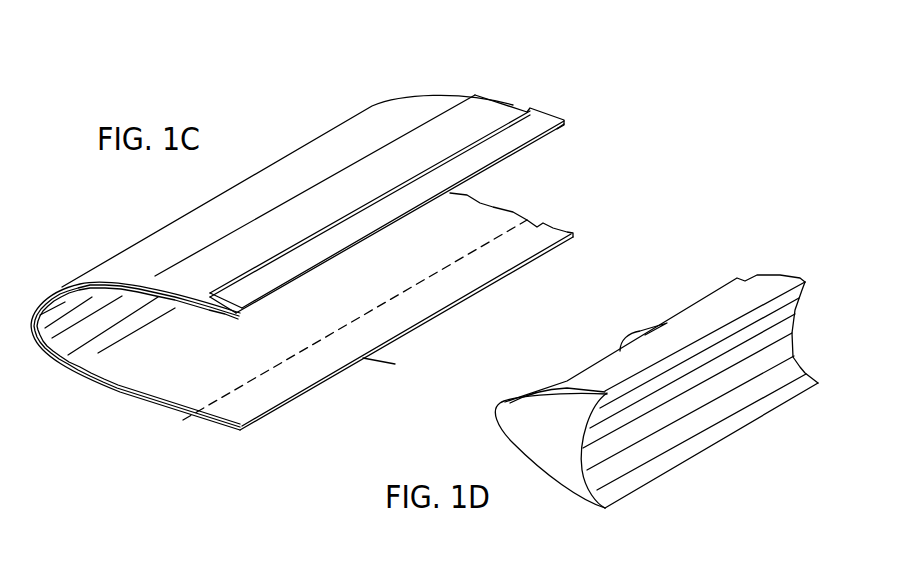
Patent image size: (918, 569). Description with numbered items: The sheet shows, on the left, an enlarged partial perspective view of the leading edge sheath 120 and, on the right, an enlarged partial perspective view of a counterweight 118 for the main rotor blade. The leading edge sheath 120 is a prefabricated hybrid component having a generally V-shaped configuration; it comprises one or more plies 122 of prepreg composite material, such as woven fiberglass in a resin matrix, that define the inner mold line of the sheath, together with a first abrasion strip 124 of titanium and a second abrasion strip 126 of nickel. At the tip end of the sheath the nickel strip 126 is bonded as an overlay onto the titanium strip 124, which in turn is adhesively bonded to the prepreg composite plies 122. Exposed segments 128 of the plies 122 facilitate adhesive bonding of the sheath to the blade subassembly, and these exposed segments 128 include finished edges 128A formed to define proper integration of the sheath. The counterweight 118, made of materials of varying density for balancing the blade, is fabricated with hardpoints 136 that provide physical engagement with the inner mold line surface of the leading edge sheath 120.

In FIG. 1D, the counterweight 118 is at (747, 268).
In FIG. 1C, the leading edge sheath 120 is at (79, 397).
In FIG. 1C, the plies of prepreg composite material 122 is at (538, 122).
In FIG. 1C, the first abrasion strip 124 is at (489, 113).
In FIG. 1C, the second abrasion strip 126 is at (413, 110).
In FIG. 1C, the exposed segments 128 is at (239, 295).
In FIG. 1C, the finished edges 128A is at (564, 127).
In FIG. 1D, the hardpoints 136 is at (650, 314).